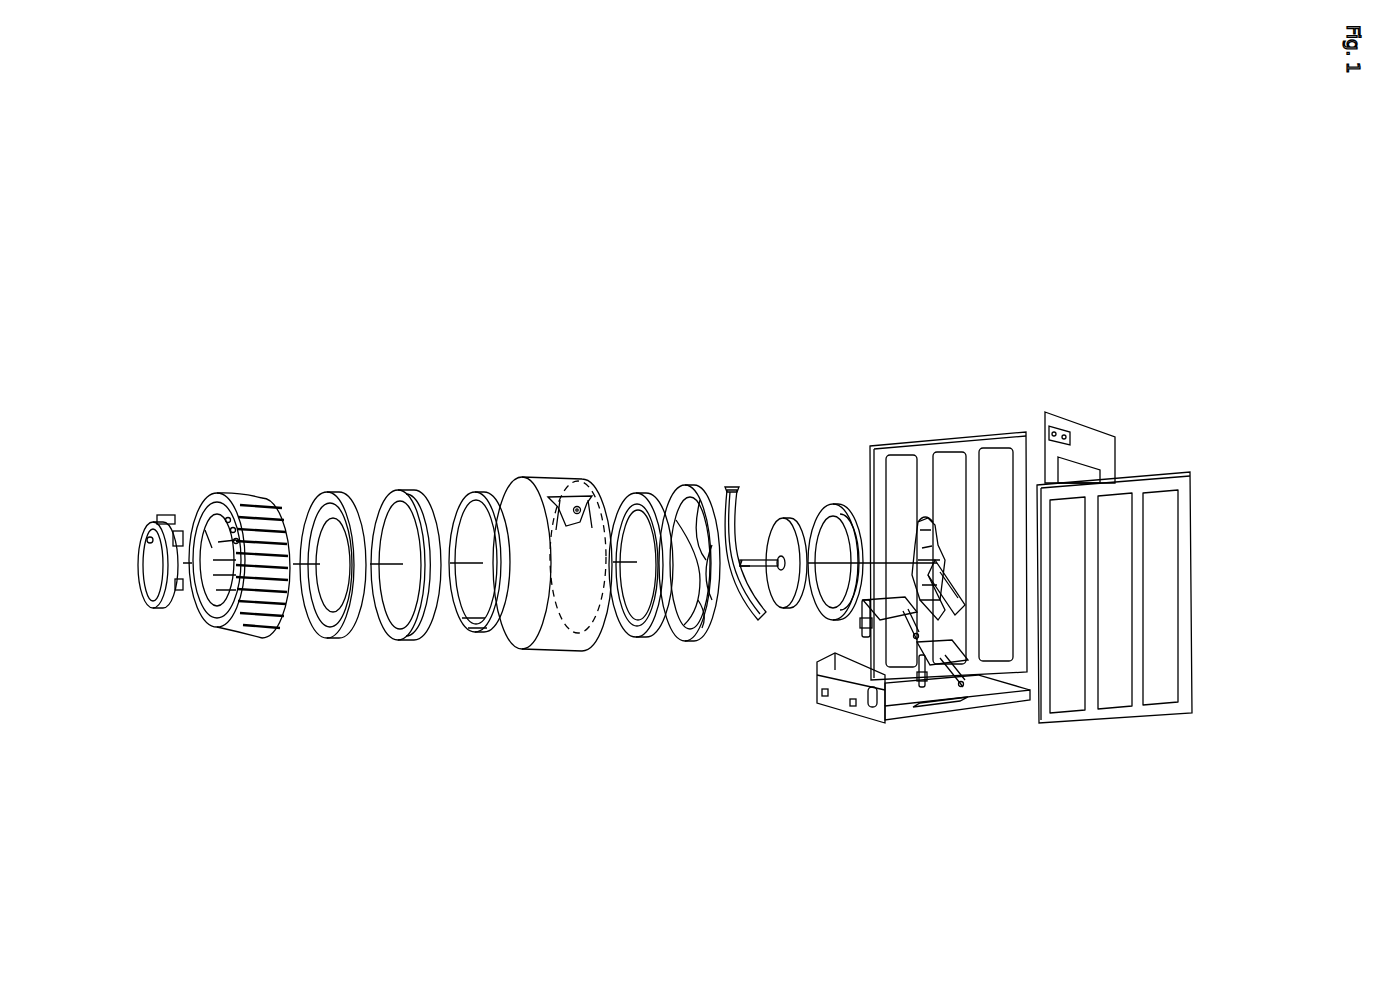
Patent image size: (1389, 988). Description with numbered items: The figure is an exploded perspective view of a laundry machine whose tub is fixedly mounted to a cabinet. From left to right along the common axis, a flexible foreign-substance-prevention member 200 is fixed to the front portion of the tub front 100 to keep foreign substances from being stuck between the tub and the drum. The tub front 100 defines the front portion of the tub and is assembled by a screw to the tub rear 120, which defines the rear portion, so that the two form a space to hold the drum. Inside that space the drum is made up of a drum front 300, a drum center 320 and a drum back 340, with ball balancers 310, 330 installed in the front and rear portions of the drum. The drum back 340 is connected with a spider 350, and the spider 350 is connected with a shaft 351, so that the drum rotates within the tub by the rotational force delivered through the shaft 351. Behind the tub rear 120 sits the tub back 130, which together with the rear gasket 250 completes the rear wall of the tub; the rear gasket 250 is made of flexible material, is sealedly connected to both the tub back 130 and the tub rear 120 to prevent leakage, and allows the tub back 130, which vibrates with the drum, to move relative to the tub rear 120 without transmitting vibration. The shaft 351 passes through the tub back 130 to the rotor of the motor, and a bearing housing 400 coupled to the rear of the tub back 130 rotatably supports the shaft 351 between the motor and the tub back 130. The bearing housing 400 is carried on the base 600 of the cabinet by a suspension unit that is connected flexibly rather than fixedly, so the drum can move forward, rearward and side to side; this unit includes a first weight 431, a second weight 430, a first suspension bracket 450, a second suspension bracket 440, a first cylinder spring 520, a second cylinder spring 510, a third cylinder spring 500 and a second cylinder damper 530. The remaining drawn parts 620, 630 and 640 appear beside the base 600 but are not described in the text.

The tub front 100 is at (246, 498).
The tub rear 120 is at (538, 482).
The tub back 130 is at (780, 522).
The foreign-substance-prevention member 200 is at (150, 600).
The rear gasket 250 is at (830, 505).
The drum front 300 is at (318, 505).
The ball balancer 310 is at (393, 490).
The drum center 320 is at (463, 500).
The ball balancer 330 is at (632, 497).
The drum back 340 is at (670, 632).
The spider 350 is at (743, 640).
The shaft 351 is at (750, 556).
The bearing housing 400 is at (945, 545).
The second weight 430 is at (937, 574).
The first weight 431 is at (953, 625).
The second suspension bracket 440 is at (909, 547).
The first suspension bracket 450 is at (928, 700).
The third cylinder spring 500 is at (940, 636).
The second cylinder spring 510 is at (862, 620).
The first cylinder spring 520 is at (935, 640).
The second cylinder damper 530 is at (918, 612).
The base 600 is at (982, 714).
The controller 620 is at (1083, 437).
The frame panel 630 is at (985, 445).
The frame panel 640 is at (1140, 480).